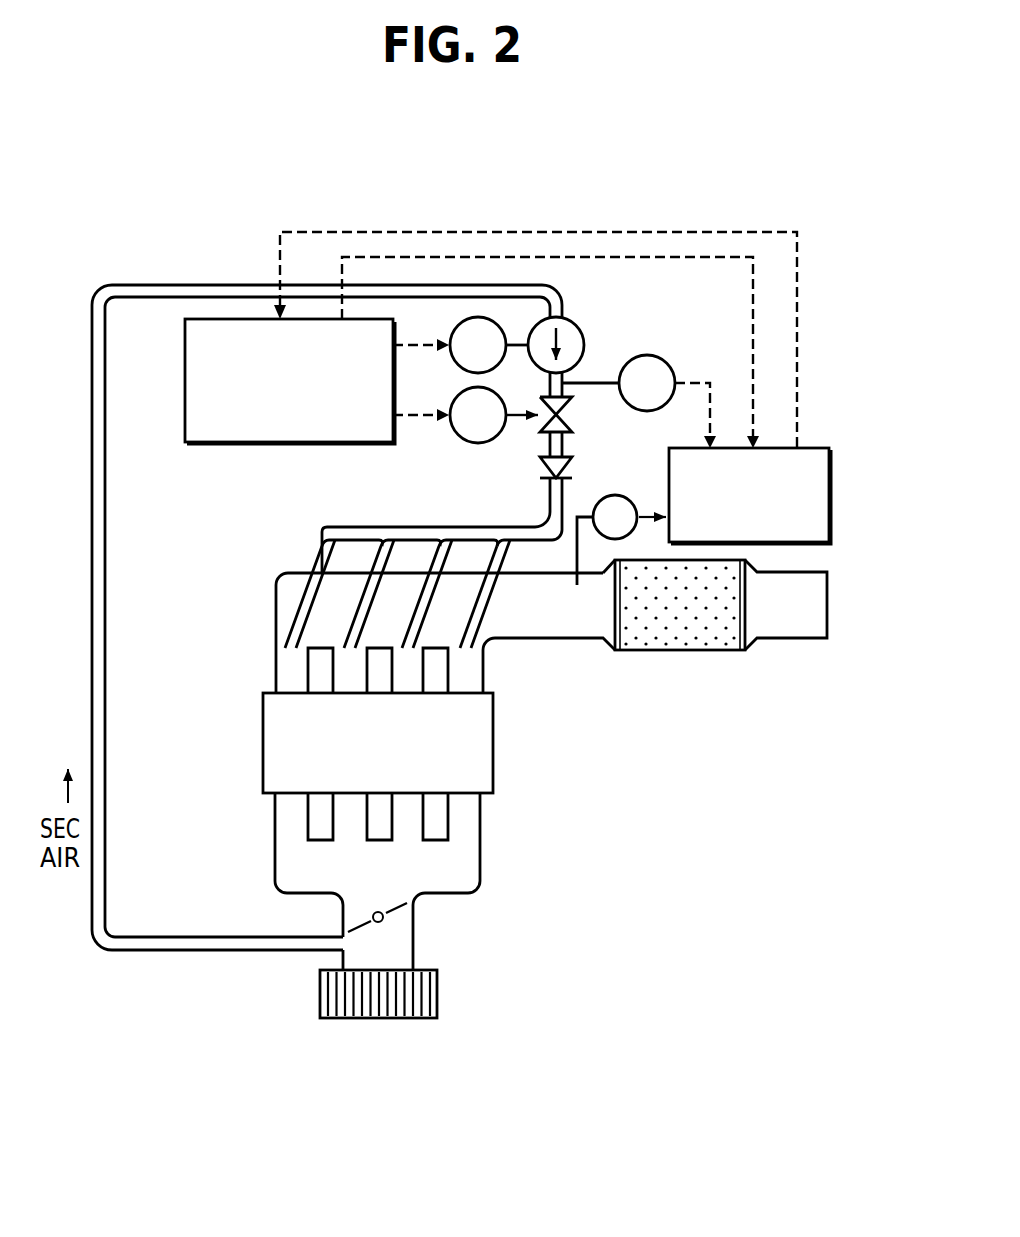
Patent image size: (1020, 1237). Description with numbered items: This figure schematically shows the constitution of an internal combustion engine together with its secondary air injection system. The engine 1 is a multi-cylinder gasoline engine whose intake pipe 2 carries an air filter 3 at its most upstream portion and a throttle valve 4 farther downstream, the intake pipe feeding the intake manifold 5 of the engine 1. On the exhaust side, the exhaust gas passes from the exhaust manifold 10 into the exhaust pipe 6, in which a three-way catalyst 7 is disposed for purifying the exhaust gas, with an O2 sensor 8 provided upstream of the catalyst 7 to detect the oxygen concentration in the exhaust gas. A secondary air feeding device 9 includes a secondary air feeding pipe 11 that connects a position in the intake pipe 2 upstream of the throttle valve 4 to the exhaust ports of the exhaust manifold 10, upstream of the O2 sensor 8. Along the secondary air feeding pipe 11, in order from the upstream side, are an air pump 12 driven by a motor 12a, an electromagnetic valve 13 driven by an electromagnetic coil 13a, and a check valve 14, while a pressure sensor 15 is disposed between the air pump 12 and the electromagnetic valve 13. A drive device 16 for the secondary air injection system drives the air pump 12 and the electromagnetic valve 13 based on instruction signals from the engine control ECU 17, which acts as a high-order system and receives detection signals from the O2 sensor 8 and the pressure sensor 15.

The engine 1 is at (493, 752).
The intake pipe 2 is at (343, 915).
The air filter 3 is at (437, 990).
The throttle valve 4 is at (388, 918).
The intake manifold 5 is at (275, 826).
The exhaust pipe 6 is at (545, 638).
The three-way catalyst 7 is at (677, 650).
The O2 sensor 8 is at (615, 495).
The secondary air feeding device 9 is at (166, 262).
The exhaust manifold 10 is at (275, 660).
The secondary air feeding pipe 11 is at (150, 950).
The air pump 12 is at (580, 326).
The motor 12a is at (456, 364).
The electromagnetic valve 13 is at (572, 413).
The electromagnetic coil 13a is at (456, 436).
The check valve 14 is at (538, 468).
The pressure sensor 15 is at (648, 355).
The drive device 16 is at (185, 375).
The engine control ECU 17 is at (829, 497).